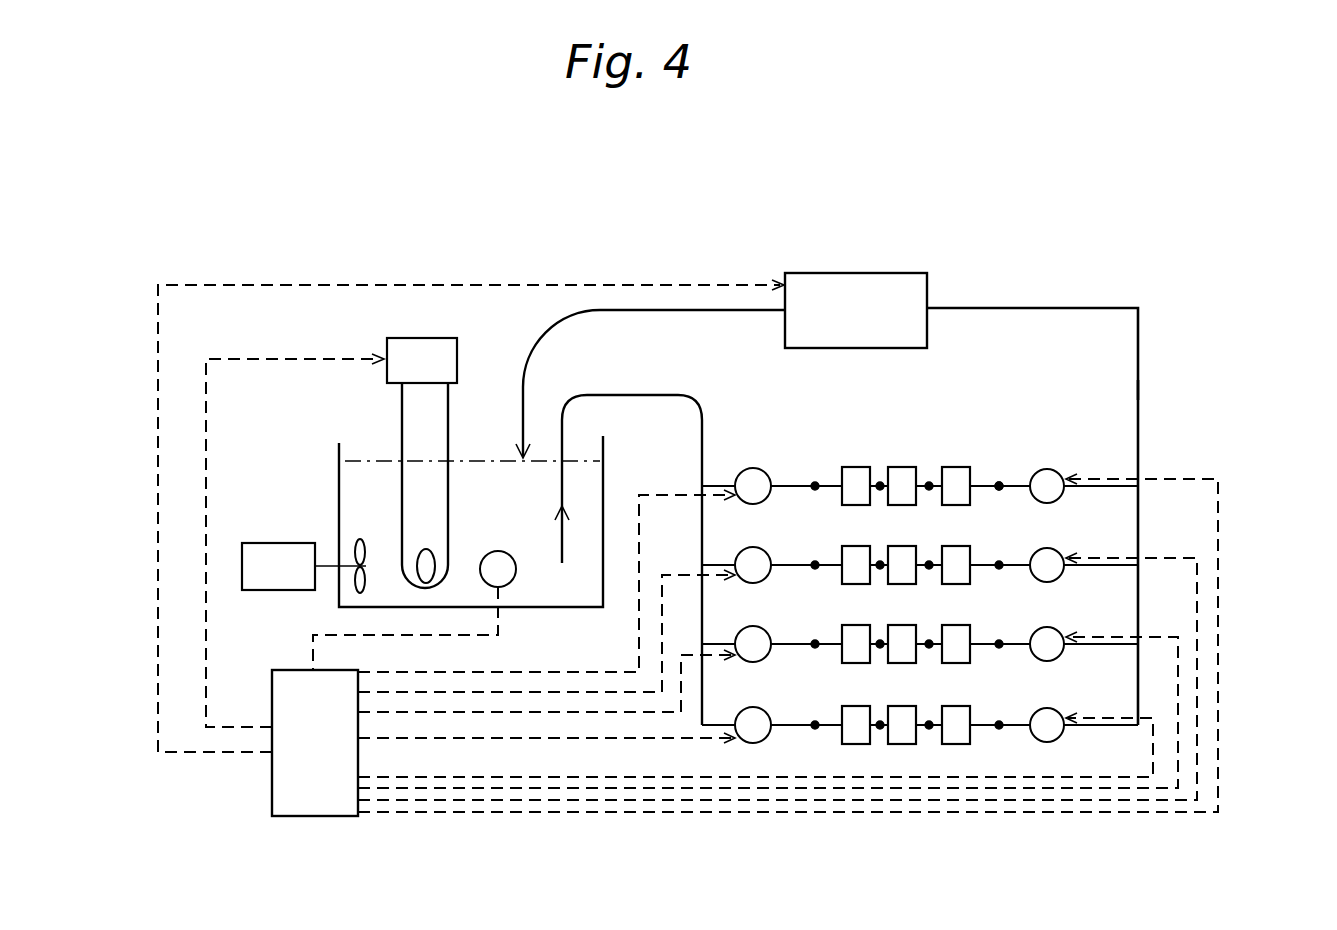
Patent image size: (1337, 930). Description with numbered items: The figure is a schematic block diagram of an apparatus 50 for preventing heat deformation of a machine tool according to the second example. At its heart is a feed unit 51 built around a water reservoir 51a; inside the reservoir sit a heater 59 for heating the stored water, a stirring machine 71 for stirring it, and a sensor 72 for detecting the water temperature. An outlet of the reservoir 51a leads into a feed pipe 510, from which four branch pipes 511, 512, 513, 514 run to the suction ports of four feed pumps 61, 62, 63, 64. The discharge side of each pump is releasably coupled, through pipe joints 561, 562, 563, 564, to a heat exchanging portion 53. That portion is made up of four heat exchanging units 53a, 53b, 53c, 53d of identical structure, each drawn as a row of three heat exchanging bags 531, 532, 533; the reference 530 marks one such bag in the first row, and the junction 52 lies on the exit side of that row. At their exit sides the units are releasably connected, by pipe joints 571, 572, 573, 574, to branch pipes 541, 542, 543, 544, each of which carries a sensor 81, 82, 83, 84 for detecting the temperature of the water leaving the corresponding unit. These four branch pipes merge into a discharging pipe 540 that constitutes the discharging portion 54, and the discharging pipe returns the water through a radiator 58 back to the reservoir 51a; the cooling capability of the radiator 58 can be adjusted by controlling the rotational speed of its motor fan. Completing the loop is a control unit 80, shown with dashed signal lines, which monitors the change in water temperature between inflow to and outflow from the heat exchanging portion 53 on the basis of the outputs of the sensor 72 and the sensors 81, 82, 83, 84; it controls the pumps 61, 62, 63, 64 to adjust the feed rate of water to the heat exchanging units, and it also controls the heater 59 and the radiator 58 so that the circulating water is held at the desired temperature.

The apparatus 50 is at (1158, 256).
The feed unit 51 is at (185, 232).
The water reservoir 51a is at (339, 490).
The junction 52 is at (976, 484).
The heat exchanging portion 53 is at (914, 400).
The heat exchanging unit 53a is at (965, 454).
The heat exchanging unit 53b is at (965, 534).
The heat exchanging unit 53c is at (965, 614).
The heat exchanging unit 53d is at (965, 695).
The discharging portion 54 is at (1153, 357).
The radiator 58 is at (873, 272).
The heater 59 is at (448, 337).
The feed pump 61 is at (766, 499).
The feed pump 62 is at (766, 578).
The feed pump 63 is at (766, 657).
The feed pump 64 is at (766, 738).
The stirring machine 71 is at (275, 543).
The sensor 72 is at (512, 582).
The control unit 80 is at (270, 797).
The sensor 81 is at (1058, 473).
The sensor 82 is at (1060, 578).
The sensor 83 is at (1060, 657).
The sensor 84 is at (1060, 738).
The feed pipe 510 is at (614, 395).
The branch pipe 511 is at (712, 480).
The branch pipe 512 is at (715, 560).
The branch pipe 513 is at (712, 640).
The branch pipe 514 is at (717, 730).
The treatment unit 530 is at (970, 503).
The heat exchanging bag 531 is at (860, 744).
The heat exchanging bag 532 is at (905, 744).
The heat exchanging bag 533 is at (957, 744).
The discharging pipe 540 is at (1142, 392).
The branch pipe 541 is at (1112, 486).
The branch pipe 542 is at (1112, 565).
The branch pipe 543 is at (1112, 644).
The branch pipe 544 is at (1120, 725).
The pipe joint 561 is at (807, 508).
The pipe joint 562 is at (808, 551).
The pipe joint 563 is at (817, 646).
The pipe joint 564 is at (817, 727).
The pipe joint 571 is at (1000, 484).
The pipe joint 572 is at (1049, 544).
The pipe joint 573 is at (1003, 626).
The pipe joint 574 is at (1003, 706).